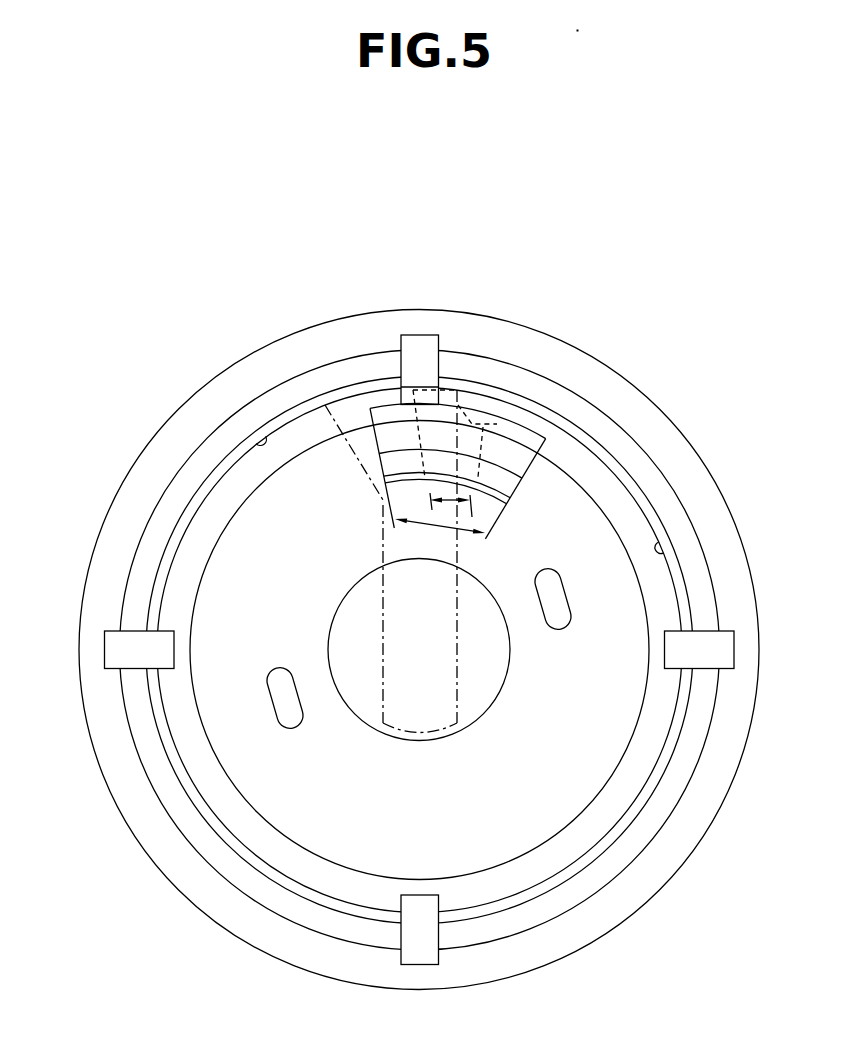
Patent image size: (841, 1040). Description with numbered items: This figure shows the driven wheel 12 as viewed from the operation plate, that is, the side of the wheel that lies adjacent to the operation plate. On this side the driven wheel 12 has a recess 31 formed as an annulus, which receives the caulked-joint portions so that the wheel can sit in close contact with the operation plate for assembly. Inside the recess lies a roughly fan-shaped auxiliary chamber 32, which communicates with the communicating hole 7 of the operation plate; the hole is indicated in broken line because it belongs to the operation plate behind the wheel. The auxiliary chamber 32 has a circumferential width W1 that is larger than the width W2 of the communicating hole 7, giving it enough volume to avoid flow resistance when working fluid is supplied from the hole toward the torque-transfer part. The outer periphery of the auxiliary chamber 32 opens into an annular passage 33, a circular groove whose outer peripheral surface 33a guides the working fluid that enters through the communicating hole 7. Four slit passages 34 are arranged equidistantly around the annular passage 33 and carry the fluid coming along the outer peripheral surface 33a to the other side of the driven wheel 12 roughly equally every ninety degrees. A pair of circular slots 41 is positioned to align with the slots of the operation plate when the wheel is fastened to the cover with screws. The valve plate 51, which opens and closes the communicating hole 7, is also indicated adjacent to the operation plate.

The driven wheel 12 is at (130, 347).
The recess 31 is at (167, 497).
The auxiliary chamber 32 is at (527, 443).
The annular passage 33 is at (233, 473).
The outer peripheral surface 33a is at (257, 440).
The slit passage 34 is at (428, 347).
The circular slot 41 is at (292, 730).
The valve plate 51 is at (383, 512).
The communicating hole 7 is at (497, 424).
The circumferential width of the auxiliary chamber W1 is at (435, 521).
The width of the communicating hole W2 is at (458, 501).